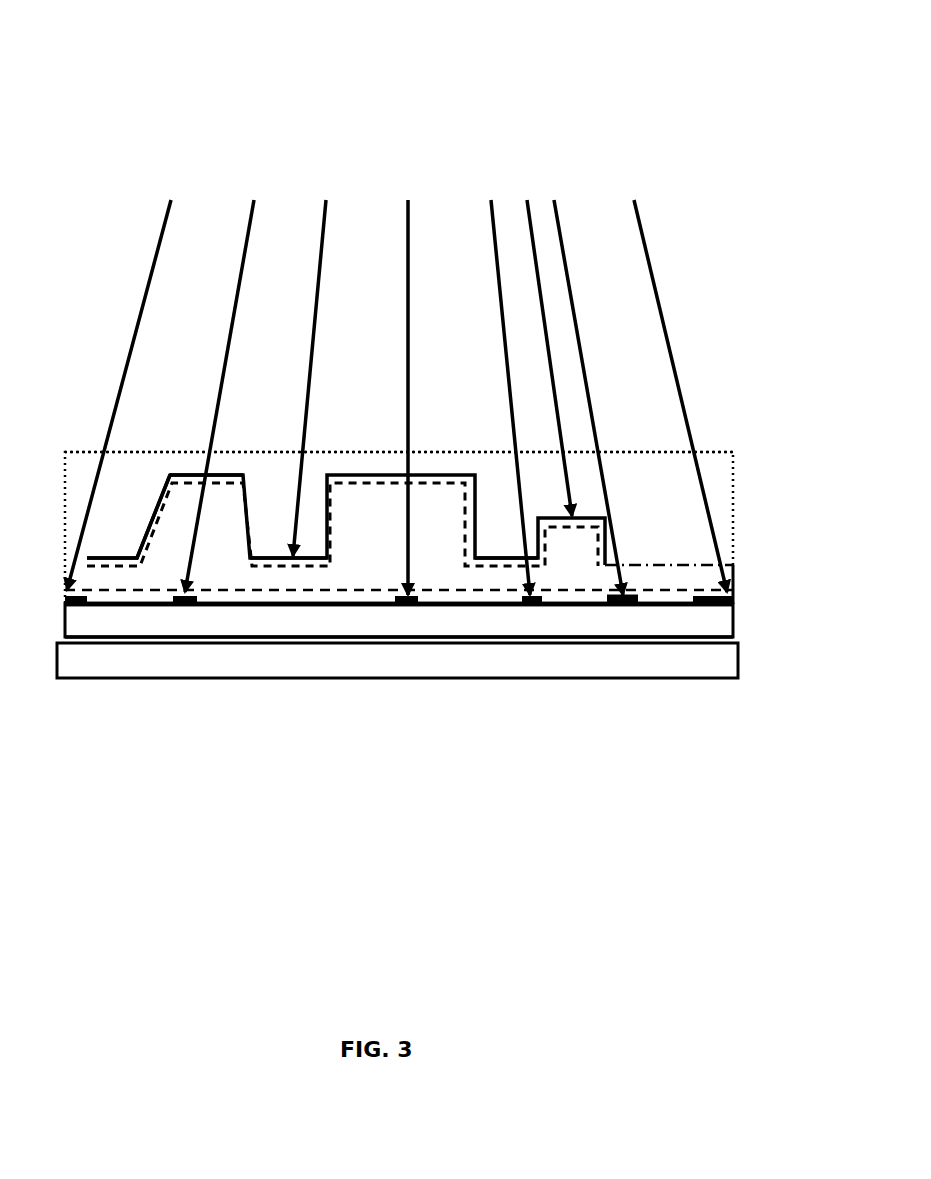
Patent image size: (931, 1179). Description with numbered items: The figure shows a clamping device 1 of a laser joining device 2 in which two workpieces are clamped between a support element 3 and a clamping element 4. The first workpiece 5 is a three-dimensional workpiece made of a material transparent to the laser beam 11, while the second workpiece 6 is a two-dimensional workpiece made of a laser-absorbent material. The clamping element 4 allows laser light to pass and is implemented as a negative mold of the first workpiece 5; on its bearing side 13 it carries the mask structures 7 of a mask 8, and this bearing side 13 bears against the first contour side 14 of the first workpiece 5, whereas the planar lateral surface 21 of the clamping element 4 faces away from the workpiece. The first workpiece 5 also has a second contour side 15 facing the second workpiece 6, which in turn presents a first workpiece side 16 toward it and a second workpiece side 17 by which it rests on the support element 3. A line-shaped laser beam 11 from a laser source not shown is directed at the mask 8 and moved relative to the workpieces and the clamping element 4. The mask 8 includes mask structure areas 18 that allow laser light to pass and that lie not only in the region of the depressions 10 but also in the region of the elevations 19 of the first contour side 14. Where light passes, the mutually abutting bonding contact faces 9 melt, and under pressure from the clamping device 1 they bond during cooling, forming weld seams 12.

The clamping device 1 is at (757, 533).
The laser joining device 2 is at (120, 112).
The support element 3 is at (103, 658).
The clamping element 4 is at (80, 468).
The first workpiece 5 is at (148, 545).
The second workpiece 6 is at (87, 618).
The mask structures 7 is at (229, 462).
The mask 8 is at (229, 462).
The bonding contact faces 9 is at (386, 596).
The depressions 10 is at (506, 520).
The laser beam 11 is at (133, 270).
The weld seams 12 is at (190, 606).
The bearing side 13 is at (740, 567).
The first contour side 14 is at (673, 560).
The second contour side 15 is at (665, 600).
The first workpiece side 16 is at (430, 608).
The second workpiece side 17 is at (496, 641).
The mask structure areas 18 is at (200, 470).
The elevations 19 is at (371, 520).
The lateral surface 21 is at (713, 445).